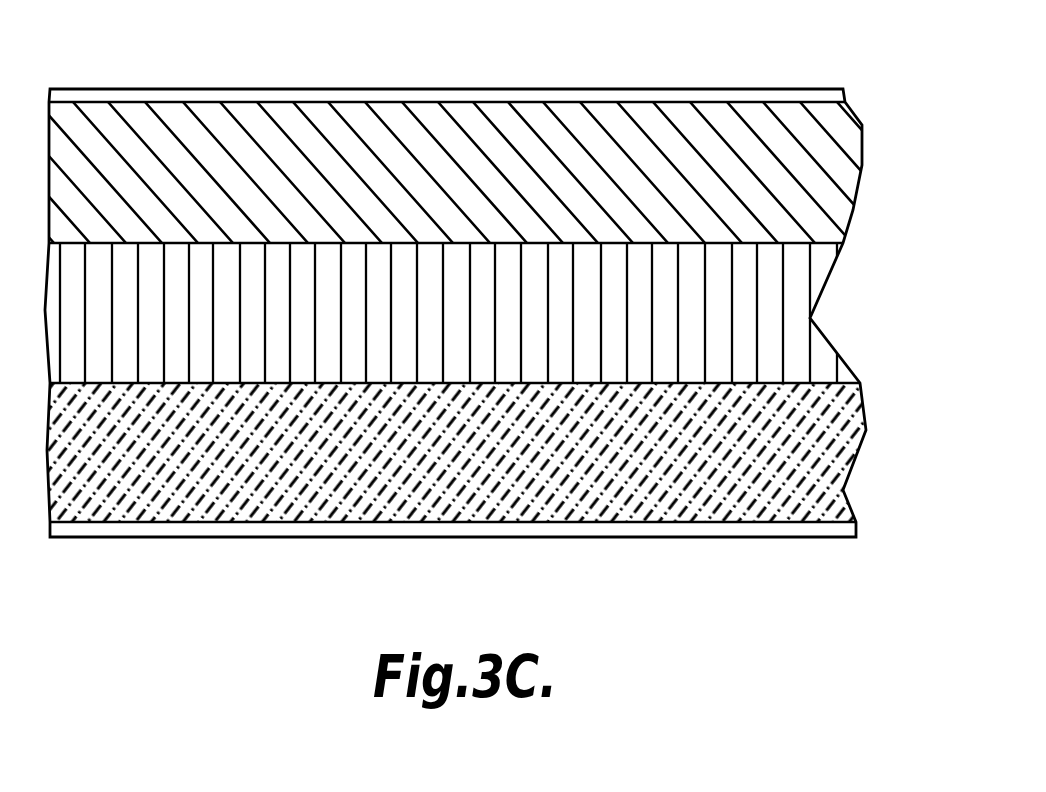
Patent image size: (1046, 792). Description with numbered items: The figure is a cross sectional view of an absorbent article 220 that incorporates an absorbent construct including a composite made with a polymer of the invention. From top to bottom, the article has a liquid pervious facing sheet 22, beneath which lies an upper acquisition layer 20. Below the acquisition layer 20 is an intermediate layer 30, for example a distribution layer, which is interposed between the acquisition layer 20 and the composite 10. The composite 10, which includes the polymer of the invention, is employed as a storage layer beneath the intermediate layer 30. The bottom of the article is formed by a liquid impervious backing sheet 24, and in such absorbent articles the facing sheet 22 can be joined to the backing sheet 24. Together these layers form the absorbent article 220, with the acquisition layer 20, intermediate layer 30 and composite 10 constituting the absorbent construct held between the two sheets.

The absorbent article 220 is at (596, 85).
The liquid pervious facing sheet 22 is at (843, 95).
The acquisition layer 20 is at (862, 167).
The intermediate layer 30 is at (812, 294).
The composite 10 is at (852, 404).
The liquid impervious backing sheet 24 is at (857, 526).